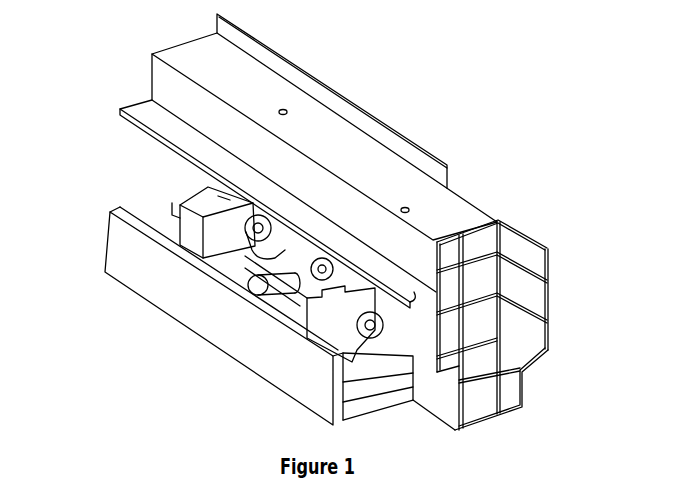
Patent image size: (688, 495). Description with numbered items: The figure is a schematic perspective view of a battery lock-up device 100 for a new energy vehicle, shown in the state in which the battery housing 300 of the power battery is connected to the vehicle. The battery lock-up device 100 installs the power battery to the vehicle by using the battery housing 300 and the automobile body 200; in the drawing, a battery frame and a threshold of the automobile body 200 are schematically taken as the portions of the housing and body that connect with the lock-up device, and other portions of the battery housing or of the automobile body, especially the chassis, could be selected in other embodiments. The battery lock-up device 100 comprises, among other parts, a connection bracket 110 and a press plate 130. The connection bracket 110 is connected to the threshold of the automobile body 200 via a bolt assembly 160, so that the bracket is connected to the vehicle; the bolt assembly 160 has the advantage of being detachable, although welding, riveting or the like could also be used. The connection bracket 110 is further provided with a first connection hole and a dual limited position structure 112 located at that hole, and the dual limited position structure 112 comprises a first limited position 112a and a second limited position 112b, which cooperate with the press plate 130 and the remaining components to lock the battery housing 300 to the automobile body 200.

The battery lock-up device 100 is at (211, 230).
The connection bracket 110 is at (527, 245).
The dual limited position structure 112 is at (268, 272).
The first limited position 112a is at (290, 280).
The second limited position 112b is at (230, 250).
The press plate 130 is at (262, 330).
The bolt assembly 160 is at (272, 212).
The automobile body 200 is at (325, 161).
The battery housing 300 is at (207, 325).